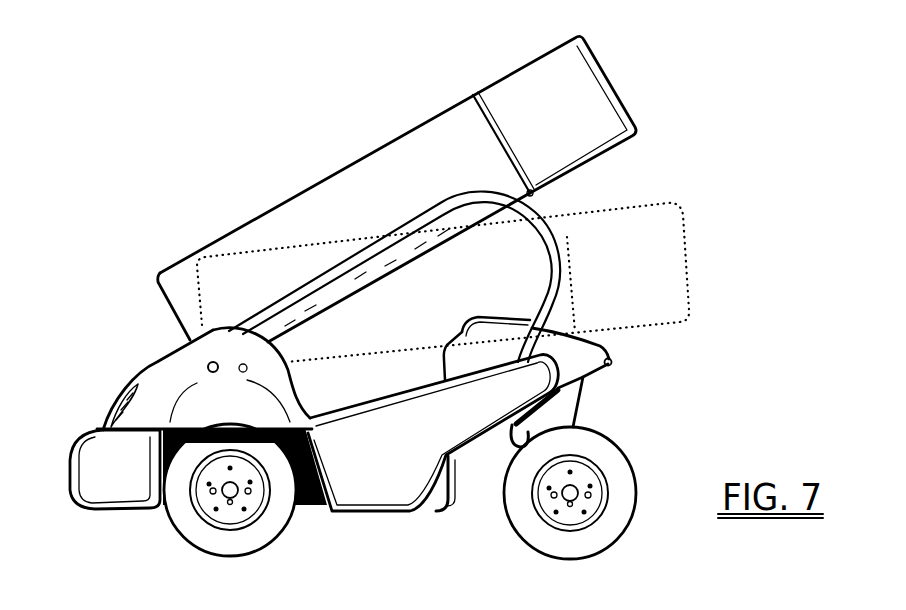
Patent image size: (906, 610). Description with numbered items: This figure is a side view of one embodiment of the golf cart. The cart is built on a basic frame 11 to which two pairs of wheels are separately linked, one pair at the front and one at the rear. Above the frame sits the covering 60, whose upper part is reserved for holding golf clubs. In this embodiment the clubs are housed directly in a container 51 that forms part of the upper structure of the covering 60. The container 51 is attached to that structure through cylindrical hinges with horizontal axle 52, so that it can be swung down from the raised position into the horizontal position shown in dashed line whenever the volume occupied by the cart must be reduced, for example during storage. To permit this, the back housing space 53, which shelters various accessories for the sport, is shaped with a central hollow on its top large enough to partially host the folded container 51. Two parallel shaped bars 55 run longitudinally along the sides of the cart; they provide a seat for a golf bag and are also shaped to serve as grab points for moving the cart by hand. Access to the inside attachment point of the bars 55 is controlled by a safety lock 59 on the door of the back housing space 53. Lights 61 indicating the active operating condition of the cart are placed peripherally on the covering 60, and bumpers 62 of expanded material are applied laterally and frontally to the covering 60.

The basic frame 11 is at (453, 497).
The container 51 is at (385, 165).
The cylindrical hinges with horizontal axle 52 is at (210, 365).
The back housing space 53 is at (590, 393).
The shaped bars 55 is at (547, 221).
The safety lock 59 is at (597, 343).
The covering 60 is at (158, 380).
The lights 61 is at (612, 363).
The bumpers 62 is at (82, 475).